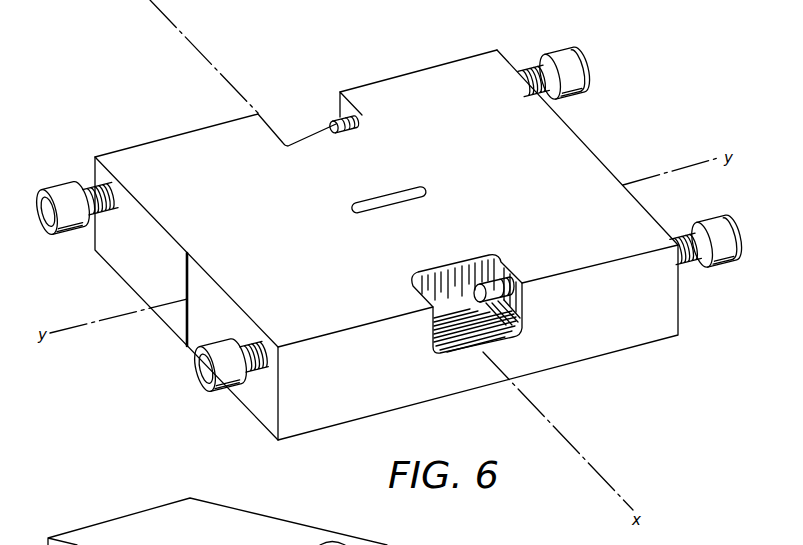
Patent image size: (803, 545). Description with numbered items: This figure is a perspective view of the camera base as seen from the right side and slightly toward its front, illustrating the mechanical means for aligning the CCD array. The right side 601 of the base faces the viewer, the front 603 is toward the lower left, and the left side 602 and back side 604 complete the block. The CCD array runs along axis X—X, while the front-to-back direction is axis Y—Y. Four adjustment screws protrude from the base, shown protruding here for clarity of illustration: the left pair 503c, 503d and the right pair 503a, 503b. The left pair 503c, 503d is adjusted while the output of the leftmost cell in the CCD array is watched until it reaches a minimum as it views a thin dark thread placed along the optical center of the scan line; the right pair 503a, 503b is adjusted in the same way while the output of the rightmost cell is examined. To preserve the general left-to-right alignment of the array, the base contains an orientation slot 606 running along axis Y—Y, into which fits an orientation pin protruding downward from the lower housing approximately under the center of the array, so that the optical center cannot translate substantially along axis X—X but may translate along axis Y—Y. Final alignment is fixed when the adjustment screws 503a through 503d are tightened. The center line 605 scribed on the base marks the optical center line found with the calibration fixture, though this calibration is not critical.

The right side 601 is at (597, 332).
The left side 602 is at (182, 131).
The front 603 is at (105, 265).
The back side 604 is at (598, 150).
The center line 605 is at (176, 337).
The orientation slot 606 is at (415, 190).
The adjustment screw 503a is at (730, 258).
The adjustment screw 503b is at (208, 380).
The adjustment screw 503c is at (578, 101).
The adjustment screw 503d is at (45, 217).